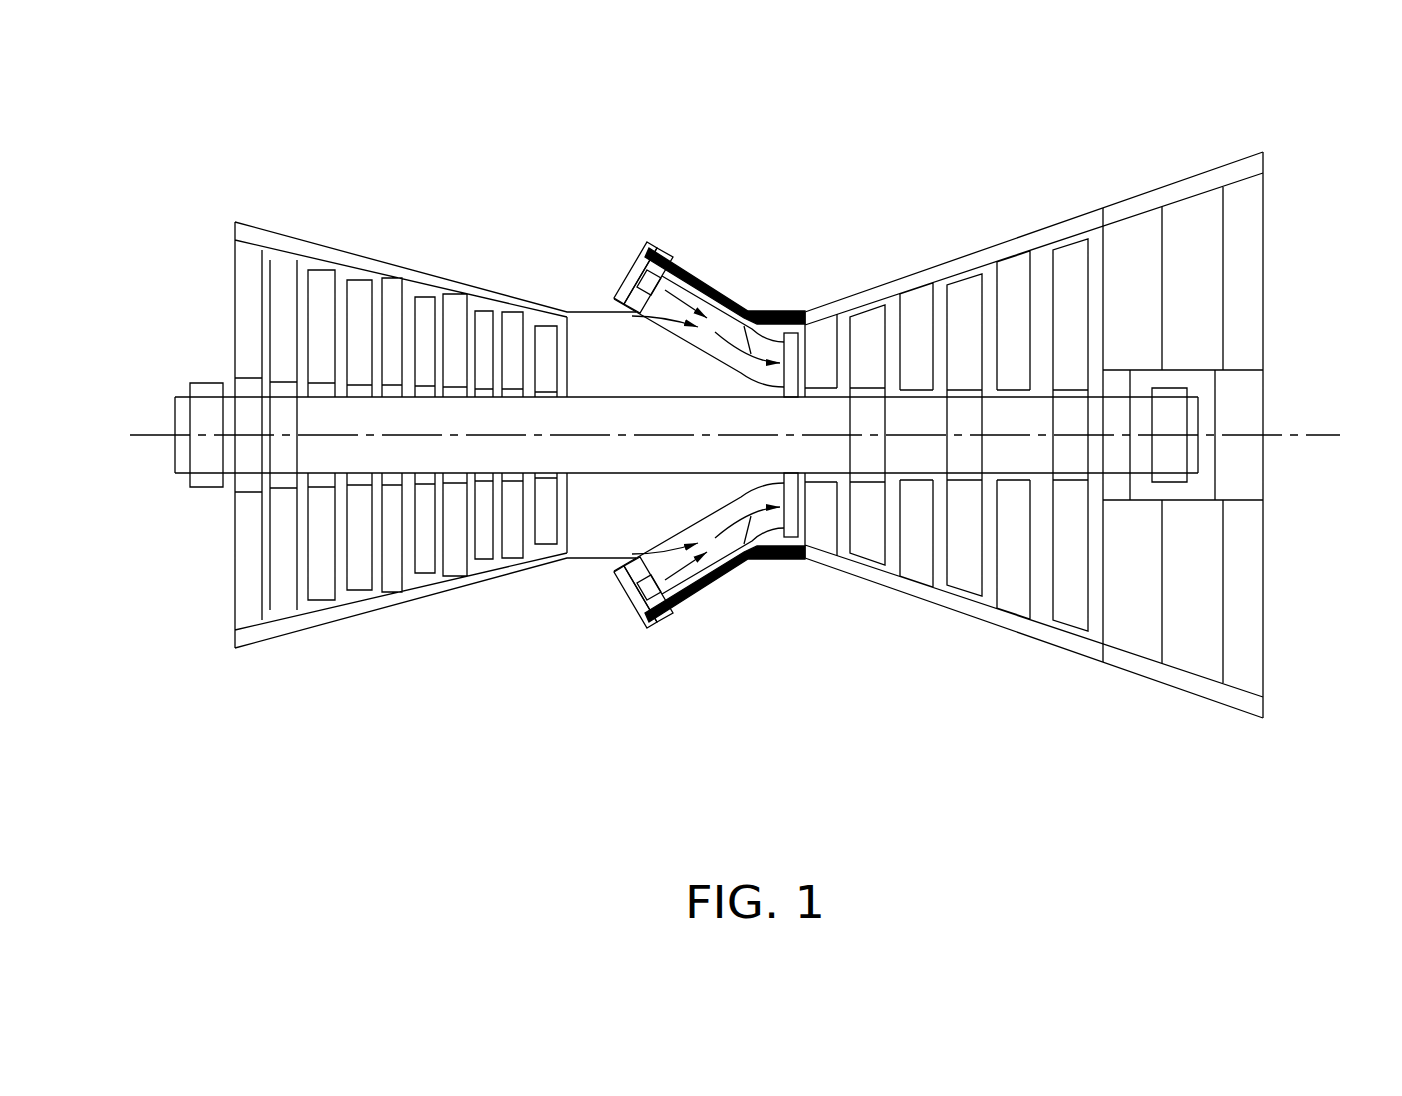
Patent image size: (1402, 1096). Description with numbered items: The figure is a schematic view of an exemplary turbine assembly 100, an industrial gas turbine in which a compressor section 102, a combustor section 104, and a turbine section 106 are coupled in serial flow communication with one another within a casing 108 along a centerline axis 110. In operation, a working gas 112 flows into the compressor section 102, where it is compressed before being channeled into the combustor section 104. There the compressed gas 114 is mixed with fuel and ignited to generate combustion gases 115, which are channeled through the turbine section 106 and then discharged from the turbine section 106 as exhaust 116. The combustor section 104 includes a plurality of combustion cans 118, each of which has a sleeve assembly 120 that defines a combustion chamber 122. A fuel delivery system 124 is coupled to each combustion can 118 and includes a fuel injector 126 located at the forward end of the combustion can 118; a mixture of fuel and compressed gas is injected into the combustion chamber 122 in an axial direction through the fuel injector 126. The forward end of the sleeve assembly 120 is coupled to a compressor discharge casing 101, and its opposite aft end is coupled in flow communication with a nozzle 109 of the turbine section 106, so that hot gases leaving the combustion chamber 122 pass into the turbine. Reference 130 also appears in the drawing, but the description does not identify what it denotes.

The turbine assembly 100 is at (375, 153).
The compressor discharge casing 101 is at (624, 556).
The compressor section 102 is at (428, 628).
The combustor section 104 is at (643, 682).
The turbine section 106 is at (935, 682).
The casing 108 is at (1133, 670).
The nozzle 109 is at (823, 517).
The centerline axis 110 is at (1302, 435).
The working gas 112 is at (160, 300).
The compressed gas 114 is at (643, 357).
The combustion gases 115 is at (793, 331).
The exhaust 116 is at (1295, 278).
The combustion can 118 is at (718, 262).
The sleeve assembly 120 is at (751, 307).
The combustion chamber 122 is at (617, 300).
The fuel delivery system 124 is at (665, 248).
The fuel injector 126 is at (622, 266).
The combustion chamber 130 is at (676, 266).